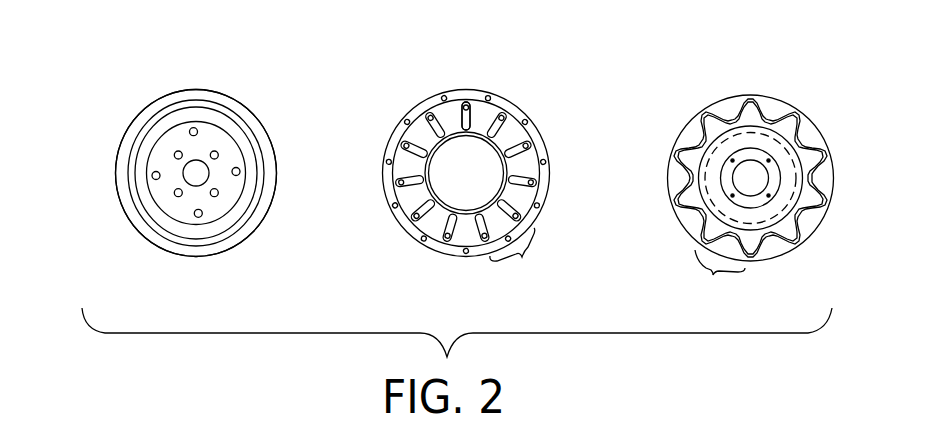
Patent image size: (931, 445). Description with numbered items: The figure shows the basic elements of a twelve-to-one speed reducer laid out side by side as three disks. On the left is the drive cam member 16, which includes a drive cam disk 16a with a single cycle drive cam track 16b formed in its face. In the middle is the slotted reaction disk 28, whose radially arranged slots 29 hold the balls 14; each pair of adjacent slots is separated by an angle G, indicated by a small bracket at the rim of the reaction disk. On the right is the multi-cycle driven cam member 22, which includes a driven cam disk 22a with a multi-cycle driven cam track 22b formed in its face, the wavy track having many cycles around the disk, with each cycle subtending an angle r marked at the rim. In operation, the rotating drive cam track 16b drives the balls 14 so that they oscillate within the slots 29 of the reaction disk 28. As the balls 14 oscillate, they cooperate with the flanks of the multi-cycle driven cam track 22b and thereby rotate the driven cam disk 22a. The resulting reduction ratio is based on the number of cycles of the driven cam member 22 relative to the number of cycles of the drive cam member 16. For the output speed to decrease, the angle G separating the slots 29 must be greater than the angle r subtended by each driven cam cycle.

The balls 14 is at (535, 148).
The drive cam member 16 is at (260, 118).
The drive cam disk 16a is at (119, 146).
The single cycle drive cam track 16b is at (220, 100).
The multi-cycle driven cam member 22 is at (687, 127).
The driven cam disk 22a is at (728, 97).
The multi-cycle driven cam track 22b is at (773, 112).
The slotted reaction disk 28 is at (507, 97).
The slots 29 is at (462, 118).
The angle separating the slots G is at (517, 255).
The angle subtended by each driven cam cycle r is at (720, 274).